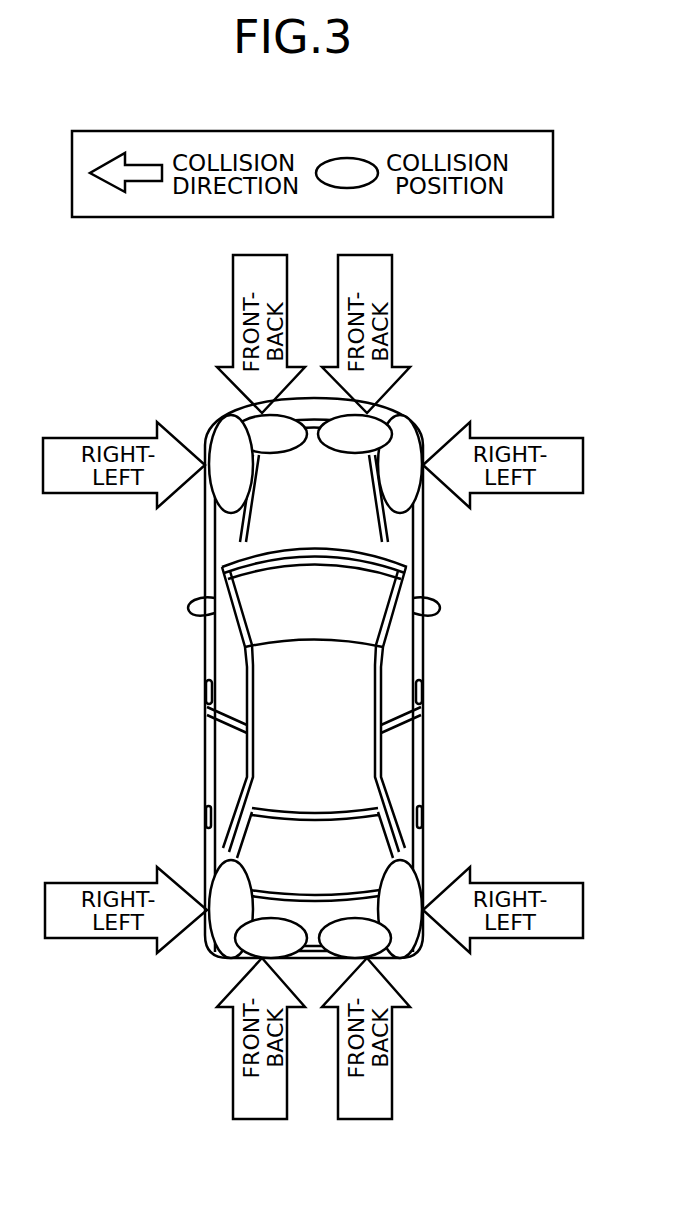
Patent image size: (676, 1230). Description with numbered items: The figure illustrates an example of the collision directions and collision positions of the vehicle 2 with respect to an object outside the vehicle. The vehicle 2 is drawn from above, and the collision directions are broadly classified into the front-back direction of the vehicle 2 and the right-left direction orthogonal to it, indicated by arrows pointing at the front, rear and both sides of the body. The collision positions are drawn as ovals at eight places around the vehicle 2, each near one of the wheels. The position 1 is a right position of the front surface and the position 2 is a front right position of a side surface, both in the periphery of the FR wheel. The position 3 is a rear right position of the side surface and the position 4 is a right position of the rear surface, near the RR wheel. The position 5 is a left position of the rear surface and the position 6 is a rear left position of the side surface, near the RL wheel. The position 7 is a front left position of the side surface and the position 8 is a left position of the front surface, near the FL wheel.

The position 1 is at (355, 434).
The vehicle 2 is at (422, 708).
The position 3 is at (400, 909).
The position 4 is at (355, 938).
The position 5 is at (271, 938).
The position 6 is at (231, 909).
The position 7 is at (231, 464).
The position 8 is at (270, 434).